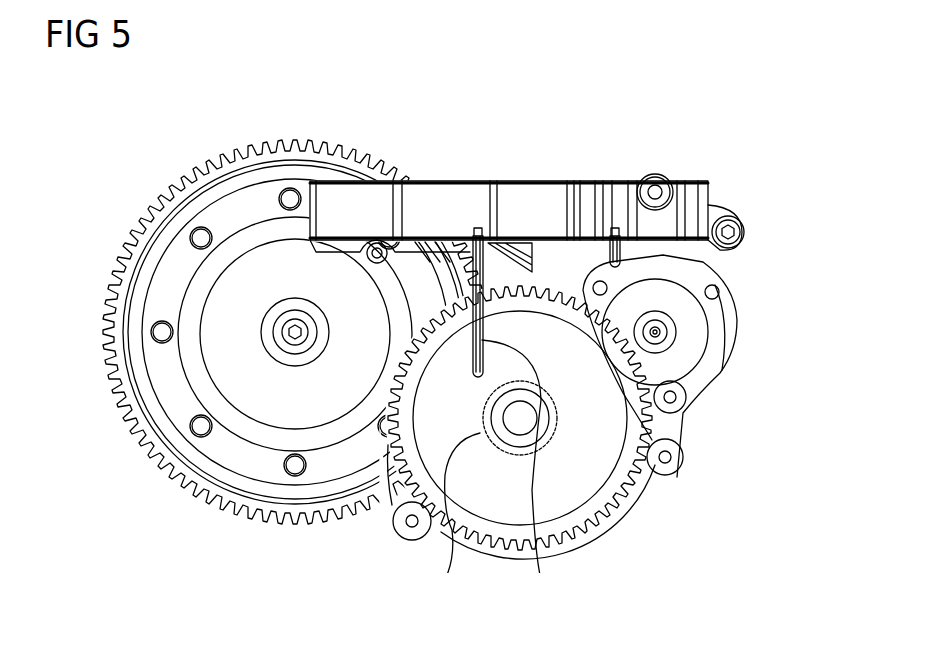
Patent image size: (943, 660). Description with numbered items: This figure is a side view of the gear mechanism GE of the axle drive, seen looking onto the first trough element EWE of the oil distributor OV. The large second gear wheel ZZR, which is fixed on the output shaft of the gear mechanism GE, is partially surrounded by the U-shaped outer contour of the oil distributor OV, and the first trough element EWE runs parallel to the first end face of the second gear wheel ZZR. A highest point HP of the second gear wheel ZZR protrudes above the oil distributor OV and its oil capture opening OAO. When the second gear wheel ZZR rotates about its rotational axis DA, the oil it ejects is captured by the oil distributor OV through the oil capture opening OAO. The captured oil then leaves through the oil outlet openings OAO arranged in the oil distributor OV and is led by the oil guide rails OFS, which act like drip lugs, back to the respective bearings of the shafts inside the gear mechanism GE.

The gear mechanism GE is at (135, 154).
The second gear wheel ZZR is at (230, 153).
The highest point HP is at (279, 126).
The oil distributor OV is at (421, 146).
The oil outlet opening OAO is at (478, 227).
The first trough element EWE is at (601, 178).
The oil guide rail OFS is at (712, 290).
The rotational axis DA is at (297, 331).